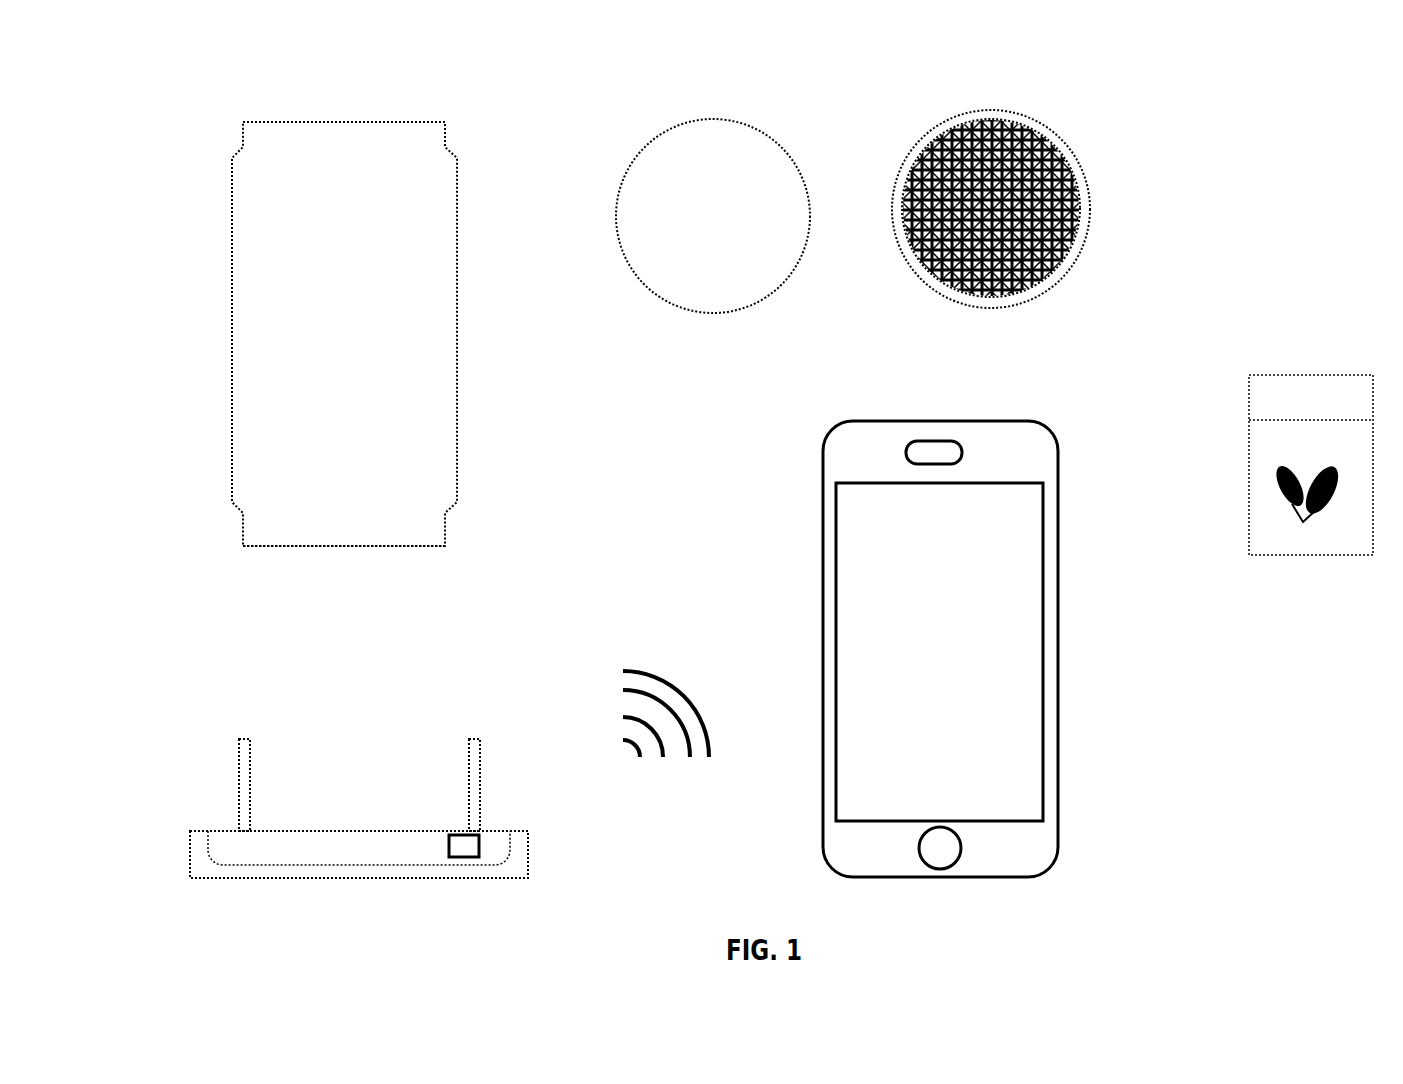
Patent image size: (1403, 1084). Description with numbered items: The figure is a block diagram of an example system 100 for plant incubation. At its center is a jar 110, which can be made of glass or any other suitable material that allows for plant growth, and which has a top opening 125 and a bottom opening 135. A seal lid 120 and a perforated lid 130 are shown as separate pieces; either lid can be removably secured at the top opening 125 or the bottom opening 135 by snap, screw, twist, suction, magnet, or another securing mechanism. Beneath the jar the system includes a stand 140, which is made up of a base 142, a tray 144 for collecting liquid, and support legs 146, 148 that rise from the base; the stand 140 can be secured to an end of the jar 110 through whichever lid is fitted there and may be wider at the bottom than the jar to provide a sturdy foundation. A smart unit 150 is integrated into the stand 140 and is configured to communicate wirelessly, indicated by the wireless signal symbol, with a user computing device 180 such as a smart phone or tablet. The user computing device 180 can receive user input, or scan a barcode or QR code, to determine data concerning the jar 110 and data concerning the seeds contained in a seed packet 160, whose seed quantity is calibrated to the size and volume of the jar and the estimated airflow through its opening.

The system 100 is at (1370, 92).
The jar 110 is at (260, 367).
The seal lid 120 is at (672, 150).
The top opening 125 is at (335, 114).
The perforated lid 130 is at (960, 148).
The bottom opening 135 is at (359, 556).
The stand 140 is at (328, 822).
The base 142 is at (203, 863).
The tray 144 is at (265, 848).
The support leg 146 is at (240, 758).
The support leg 148 is at (473, 758).
The smart unit 150 is at (476, 850).
The seed packet 160 is at (1302, 386).
The user computing device 180 is at (1032, 435).